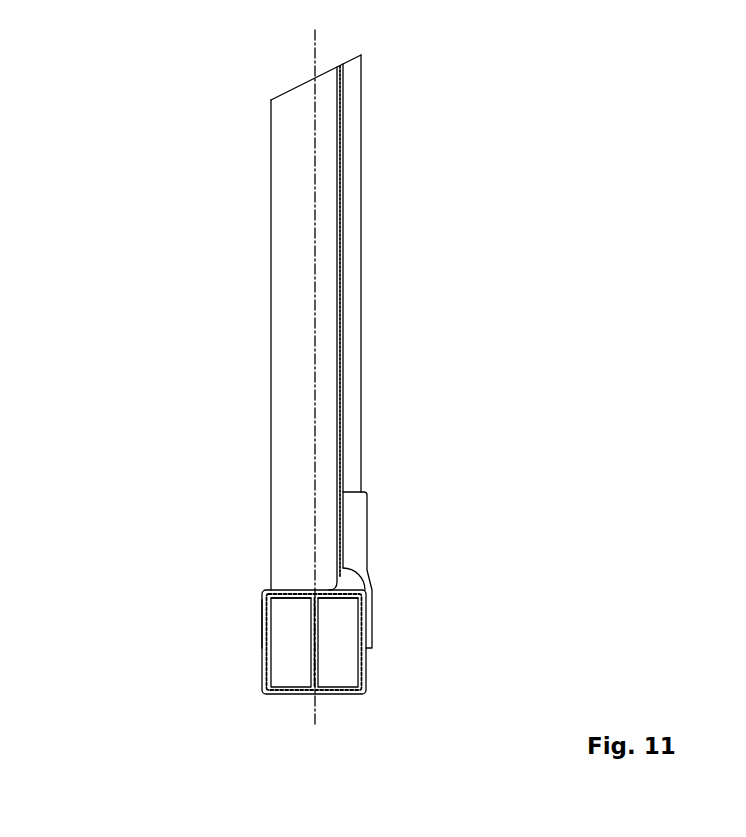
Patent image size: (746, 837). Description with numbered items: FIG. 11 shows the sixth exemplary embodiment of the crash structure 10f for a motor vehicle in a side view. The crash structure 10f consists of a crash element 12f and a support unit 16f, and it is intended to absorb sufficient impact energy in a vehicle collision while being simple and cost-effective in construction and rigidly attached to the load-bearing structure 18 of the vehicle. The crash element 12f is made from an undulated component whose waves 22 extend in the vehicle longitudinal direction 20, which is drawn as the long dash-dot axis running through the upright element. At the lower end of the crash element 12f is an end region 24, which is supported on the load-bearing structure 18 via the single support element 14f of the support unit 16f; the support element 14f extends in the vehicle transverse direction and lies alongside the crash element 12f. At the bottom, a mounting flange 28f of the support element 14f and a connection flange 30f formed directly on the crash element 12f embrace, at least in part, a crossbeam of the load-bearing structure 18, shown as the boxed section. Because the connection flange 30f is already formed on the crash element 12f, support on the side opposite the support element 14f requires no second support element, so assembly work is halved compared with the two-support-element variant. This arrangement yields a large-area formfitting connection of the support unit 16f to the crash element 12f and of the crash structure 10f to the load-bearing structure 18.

The crash structure 10f is at (178, 130).
The crash element 12f is at (353, 275).
The support element 14f is at (360, 545).
The support unit 16f is at (395, 568).
The load-bearing structure 18 is at (265, 667).
The vehicle longitudinal direction 20 is at (312, 66).
The waves 22 is at (280, 318).
The end region 24 is at (237, 577).
The mounting flange 28f is at (372, 624).
The connection flange 30f is at (262, 623).